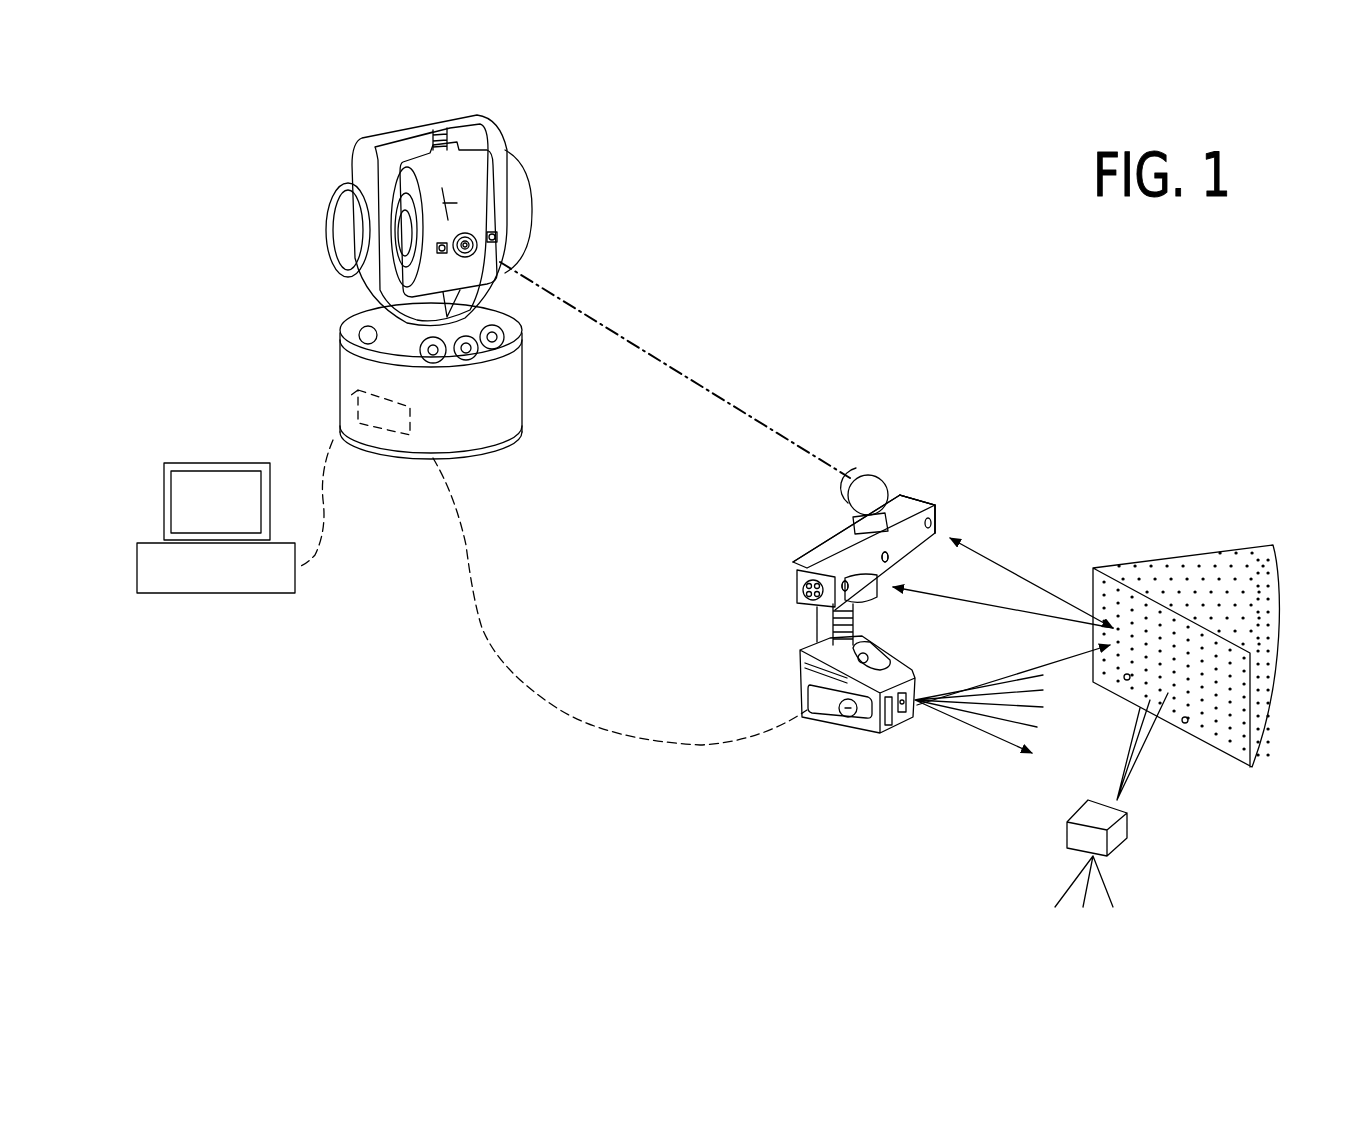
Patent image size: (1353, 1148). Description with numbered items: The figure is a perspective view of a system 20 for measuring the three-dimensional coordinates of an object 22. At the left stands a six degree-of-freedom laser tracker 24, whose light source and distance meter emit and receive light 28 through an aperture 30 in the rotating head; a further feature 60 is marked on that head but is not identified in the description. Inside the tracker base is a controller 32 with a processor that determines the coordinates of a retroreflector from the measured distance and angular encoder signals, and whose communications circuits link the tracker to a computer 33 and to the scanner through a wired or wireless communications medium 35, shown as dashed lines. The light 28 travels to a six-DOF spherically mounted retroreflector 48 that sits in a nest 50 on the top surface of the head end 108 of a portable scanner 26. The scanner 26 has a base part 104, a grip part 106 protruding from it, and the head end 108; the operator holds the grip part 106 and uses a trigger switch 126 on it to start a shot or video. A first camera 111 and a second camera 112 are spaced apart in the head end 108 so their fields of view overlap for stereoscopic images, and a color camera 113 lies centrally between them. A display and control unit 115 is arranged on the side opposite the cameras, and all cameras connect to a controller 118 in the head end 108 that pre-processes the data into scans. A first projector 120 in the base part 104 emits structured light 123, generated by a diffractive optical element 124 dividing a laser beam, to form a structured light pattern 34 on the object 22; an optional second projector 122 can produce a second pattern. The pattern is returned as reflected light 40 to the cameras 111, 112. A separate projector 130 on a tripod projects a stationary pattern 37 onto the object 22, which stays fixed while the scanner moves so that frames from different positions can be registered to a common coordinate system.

The system 20 is at (782, 266).
The object 22 is at (1203, 558).
The laser tracker 24 is at (341, 342).
The scanner 26 is at (963, 450).
The light 28 is at (652, 353).
The aperture 30 is at (478, 235).
The controller 32 is at (345, 396).
The computer 33 is at (228, 595).
The structured light pattern 34 is at (1127, 677).
The communications medium 35 is at (475, 628).
The stationary pattern 37 is at (1185, 720).
The reflected light 40 is at (1110, 627).
The six-DOF spherically mounted retroreflector 48 is at (862, 470).
The nest 50 is at (925, 505).
The orientation camera 60 is at (445, 195).
The base part 104 is at (818, 716).
The grip part 106 is at (805, 630).
The head end 108 is at (905, 500).
The first camera 111 is at (805, 557).
The second camera 112 is at (937, 510).
The color camera 113 is at (890, 556).
The display and control unit 115 is at (805, 518).
The controller 118 is at (790, 607).
The first projector 120 is at (905, 712).
The second projector 122 is at (953, 668).
The structured light 123 is at (980, 752).
The diffractive optical element 124 is at (838, 735).
The trigger switch 126 is at (880, 590).
The separate projector 130 is at (1117, 832).